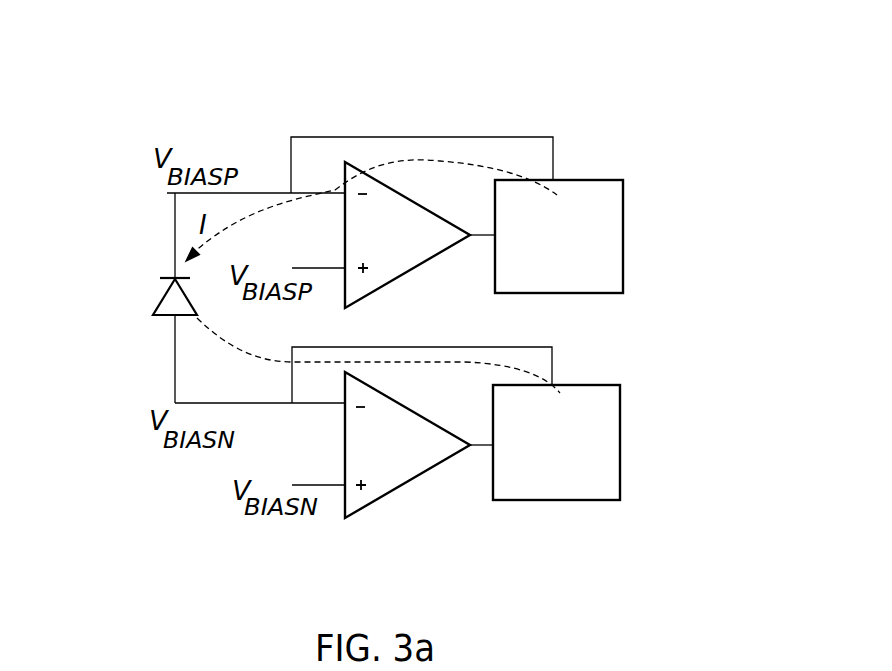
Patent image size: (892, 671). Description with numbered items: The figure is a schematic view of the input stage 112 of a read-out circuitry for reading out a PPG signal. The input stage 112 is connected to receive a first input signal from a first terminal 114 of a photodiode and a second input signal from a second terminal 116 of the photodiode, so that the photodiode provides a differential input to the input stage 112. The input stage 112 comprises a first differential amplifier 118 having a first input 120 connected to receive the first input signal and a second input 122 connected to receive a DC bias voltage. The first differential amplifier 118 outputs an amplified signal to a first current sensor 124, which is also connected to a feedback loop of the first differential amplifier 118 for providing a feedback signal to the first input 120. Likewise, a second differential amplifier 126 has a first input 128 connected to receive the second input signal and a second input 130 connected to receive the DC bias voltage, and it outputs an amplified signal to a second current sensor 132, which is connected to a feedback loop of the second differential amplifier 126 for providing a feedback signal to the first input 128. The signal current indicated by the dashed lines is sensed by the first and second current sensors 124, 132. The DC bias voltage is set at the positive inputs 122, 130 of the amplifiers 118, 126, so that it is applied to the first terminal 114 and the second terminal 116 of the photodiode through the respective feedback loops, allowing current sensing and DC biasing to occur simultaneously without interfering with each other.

The input stage 112 is at (197, 119).
The first terminal 114 is at (172, 193).
The second terminal 116 is at (175, 403).
The first differential amplifier 118 is at (402, 196).
The first input 120 is at (343, 194).
The second input 122 is at (343, 277).
The first current sensor 124 is at (583, 179).
The second differential amplifier 126 is at (408, 487).
The first input 128 is at (343, 405).
The second input 130 is at (344, 487).
The second current sensor 132 is at (622, 483).